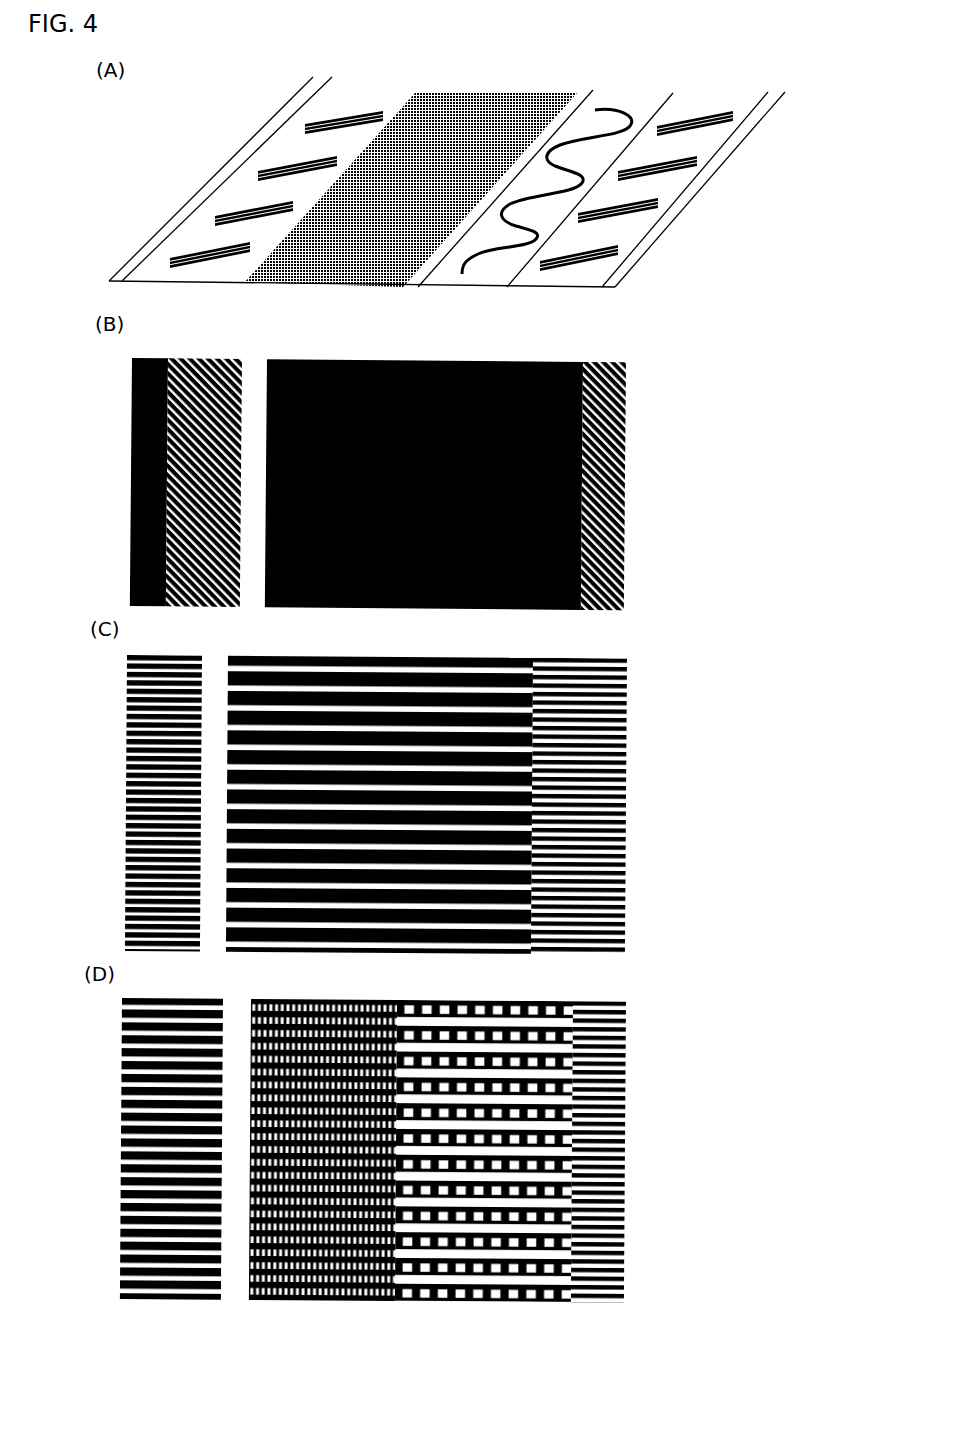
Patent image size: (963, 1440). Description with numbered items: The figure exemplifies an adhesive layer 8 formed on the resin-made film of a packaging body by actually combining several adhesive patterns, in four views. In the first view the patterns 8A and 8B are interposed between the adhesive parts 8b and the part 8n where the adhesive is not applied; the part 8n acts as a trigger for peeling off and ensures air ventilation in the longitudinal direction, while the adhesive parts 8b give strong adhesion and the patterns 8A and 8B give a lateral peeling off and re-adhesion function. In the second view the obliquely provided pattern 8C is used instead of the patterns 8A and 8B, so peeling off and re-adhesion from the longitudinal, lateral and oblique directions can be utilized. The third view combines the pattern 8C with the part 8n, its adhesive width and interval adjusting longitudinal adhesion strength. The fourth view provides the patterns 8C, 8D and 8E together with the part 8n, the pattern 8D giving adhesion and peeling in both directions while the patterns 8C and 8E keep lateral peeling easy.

The adhesive layer 8 is at (199, 171).
The adhesive parts 8b is at (410, 115).
The part not applied the adhesive 8n is at (109, 283).
The pattern of non-adhesive parts applied fragmentarily 8A is at (183, 283).
The pattern of non-adhesive parts applied continually with spline form 8B is at (463, 288).
The pattern of non-adhesive parts 8C is at (218, 358).
The pattern of non-adhesive parts 8D is at (322, 998).
The pattern of non-adhesive parts 8E is at (478, 998).